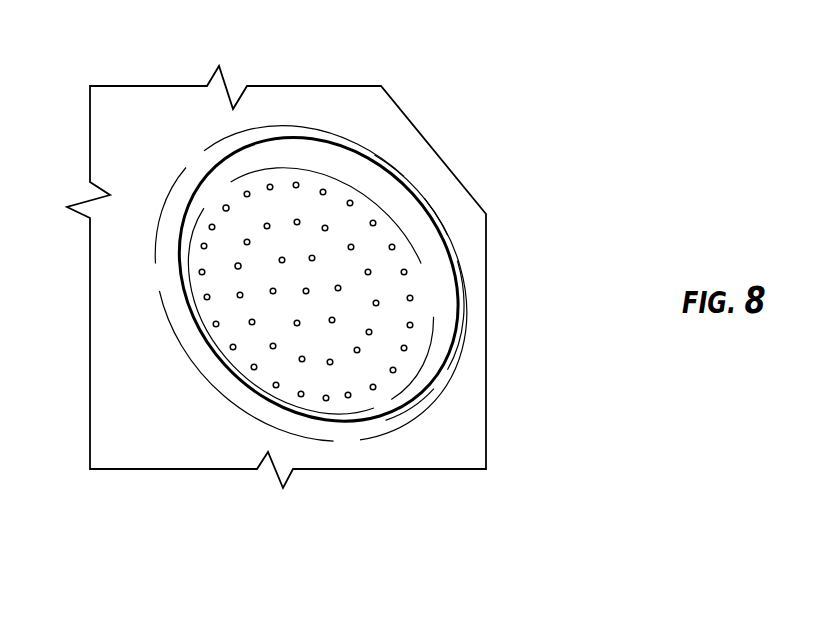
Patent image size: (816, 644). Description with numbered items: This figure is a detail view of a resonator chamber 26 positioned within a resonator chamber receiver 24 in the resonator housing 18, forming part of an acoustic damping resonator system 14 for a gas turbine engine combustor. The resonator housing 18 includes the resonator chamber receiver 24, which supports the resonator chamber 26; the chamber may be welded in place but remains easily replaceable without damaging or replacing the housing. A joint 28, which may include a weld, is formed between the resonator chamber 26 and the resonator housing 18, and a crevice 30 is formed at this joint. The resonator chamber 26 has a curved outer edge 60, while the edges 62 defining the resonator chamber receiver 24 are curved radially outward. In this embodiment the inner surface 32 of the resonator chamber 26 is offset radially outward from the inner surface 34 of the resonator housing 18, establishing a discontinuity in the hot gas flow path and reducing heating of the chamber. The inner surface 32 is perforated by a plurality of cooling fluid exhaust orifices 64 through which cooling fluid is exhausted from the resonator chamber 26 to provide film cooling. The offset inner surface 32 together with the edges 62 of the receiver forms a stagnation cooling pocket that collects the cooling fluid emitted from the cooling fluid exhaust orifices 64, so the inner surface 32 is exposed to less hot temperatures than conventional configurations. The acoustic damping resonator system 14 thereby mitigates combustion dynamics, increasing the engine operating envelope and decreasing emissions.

The acoustic damping resonator system 14 is at (625, 114).
The resonator housing 18 is at (467, 440).
The resonator chamber receiver 24 is at (262, 398).
The resonator chamber 26 is at (410, 298).
The joint 28 is at (457, 337).
The crevice 30 is at (442, 370).
The inner surface of the resonator chamber 32 is at (303, 256).
The inner surface of the resonator housing 34 is at (158, 356).
The outer edge 60 is at (397, 215).
The edge 62 is at (361, 430).
The cooling fluid exhaust orifice 64 is at (226, 208).